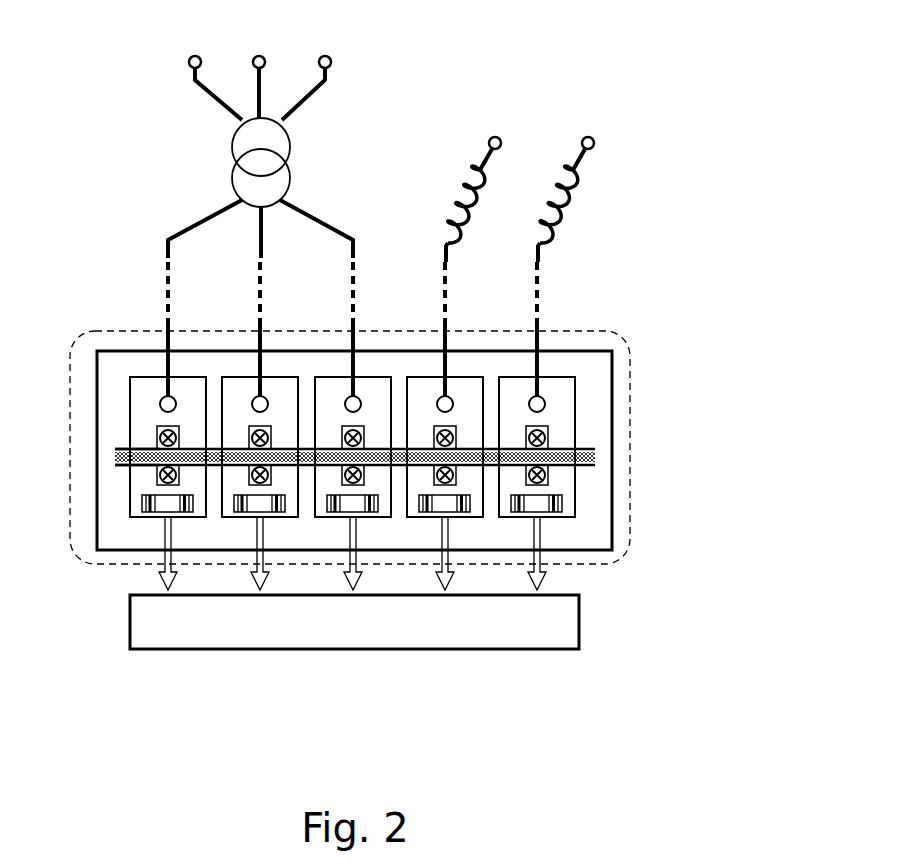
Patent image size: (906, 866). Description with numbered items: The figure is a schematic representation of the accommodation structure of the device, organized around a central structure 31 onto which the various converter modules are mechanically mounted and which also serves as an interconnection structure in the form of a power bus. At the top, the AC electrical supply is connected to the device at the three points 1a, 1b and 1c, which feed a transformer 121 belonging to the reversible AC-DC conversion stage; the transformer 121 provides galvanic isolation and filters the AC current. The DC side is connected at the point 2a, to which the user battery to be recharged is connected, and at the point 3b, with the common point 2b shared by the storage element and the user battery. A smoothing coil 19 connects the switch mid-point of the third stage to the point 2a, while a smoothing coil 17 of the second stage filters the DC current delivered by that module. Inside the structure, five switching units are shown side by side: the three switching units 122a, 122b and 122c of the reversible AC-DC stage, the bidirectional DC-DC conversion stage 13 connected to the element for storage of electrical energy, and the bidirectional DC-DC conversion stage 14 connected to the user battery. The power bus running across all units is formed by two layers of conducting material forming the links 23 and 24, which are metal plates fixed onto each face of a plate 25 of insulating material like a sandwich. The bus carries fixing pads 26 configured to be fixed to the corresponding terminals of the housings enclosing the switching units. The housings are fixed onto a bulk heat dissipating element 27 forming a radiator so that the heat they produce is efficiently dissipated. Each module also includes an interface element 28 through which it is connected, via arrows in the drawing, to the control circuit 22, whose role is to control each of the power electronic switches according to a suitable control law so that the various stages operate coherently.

The AC supply connection point 1a is at (213, 70).
The AC supply connection point 1b is at (258, 69).
The AC supply connection point 1c is at (307, 70).
The transformer 121 is at (208, 188).
The user battery connection point 2a is at (494, 136).
The second DC terminal 3b is at (586, 136).
The smoothing coil 19 is at (441, 183).
The smoothing coil 17 is at (606, 214).
The heat dissipating element 27 is at (311, 411).
The central structure 31 is at (389, 479).
The switching unit 122a is at (106, 442).
The switching unit 122b is at (246, 426).
The switching unit 122c is at (339, 426).
The bidirectional DC-DC conversion stage 14 is at (434, 426).
The bidirectional DC-DC conversion stage 13 is at (584, 426).
The fixing pad 26 is at (609, 382).
The DC connection point 2b is at (583, 493).
The power bus link 23 is at (350, 465).
The power bus link 24 is at (407, 504).
The insulating material layer 25 is at (80, 464).
The gate driver unit 28 is at (112, 558).
The control circuit 22 is at (315, 655).